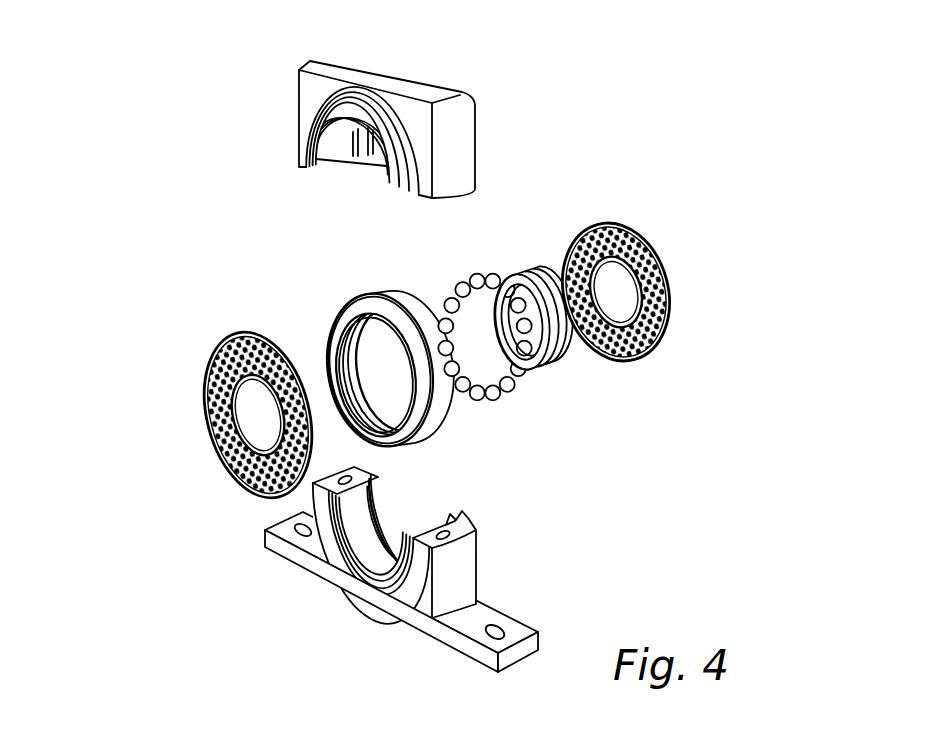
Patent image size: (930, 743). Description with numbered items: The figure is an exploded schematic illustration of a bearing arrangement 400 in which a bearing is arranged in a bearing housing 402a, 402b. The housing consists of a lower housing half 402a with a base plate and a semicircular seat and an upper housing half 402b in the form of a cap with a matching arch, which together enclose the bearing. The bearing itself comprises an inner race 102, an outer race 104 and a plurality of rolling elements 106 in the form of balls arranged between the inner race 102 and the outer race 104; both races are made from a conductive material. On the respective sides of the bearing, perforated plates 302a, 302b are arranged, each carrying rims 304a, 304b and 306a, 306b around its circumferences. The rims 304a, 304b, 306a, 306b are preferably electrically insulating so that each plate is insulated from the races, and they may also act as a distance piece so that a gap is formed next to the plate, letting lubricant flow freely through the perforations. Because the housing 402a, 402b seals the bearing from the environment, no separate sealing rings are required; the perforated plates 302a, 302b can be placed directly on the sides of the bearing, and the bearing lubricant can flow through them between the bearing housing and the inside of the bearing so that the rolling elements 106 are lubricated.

The bearing arrangement 400 is at (188, 125).
The bearing housing 402a is at (466, 557).
The bearing housing 402b is at (467, 99).
The outer race 104 is at (383, 293).
The rolling elements 106 is at (476, 284).
The inner race 102 is at (548, 268).
The perforated plate 302a is at (242, 330).
The rim 304a is at (208, 428).
The rim 306a is at (246, 497).
The perforated plate 302b is at (620, 224).
The rim 304b is at (663, 338).
The rim 306b is at (632, 362).